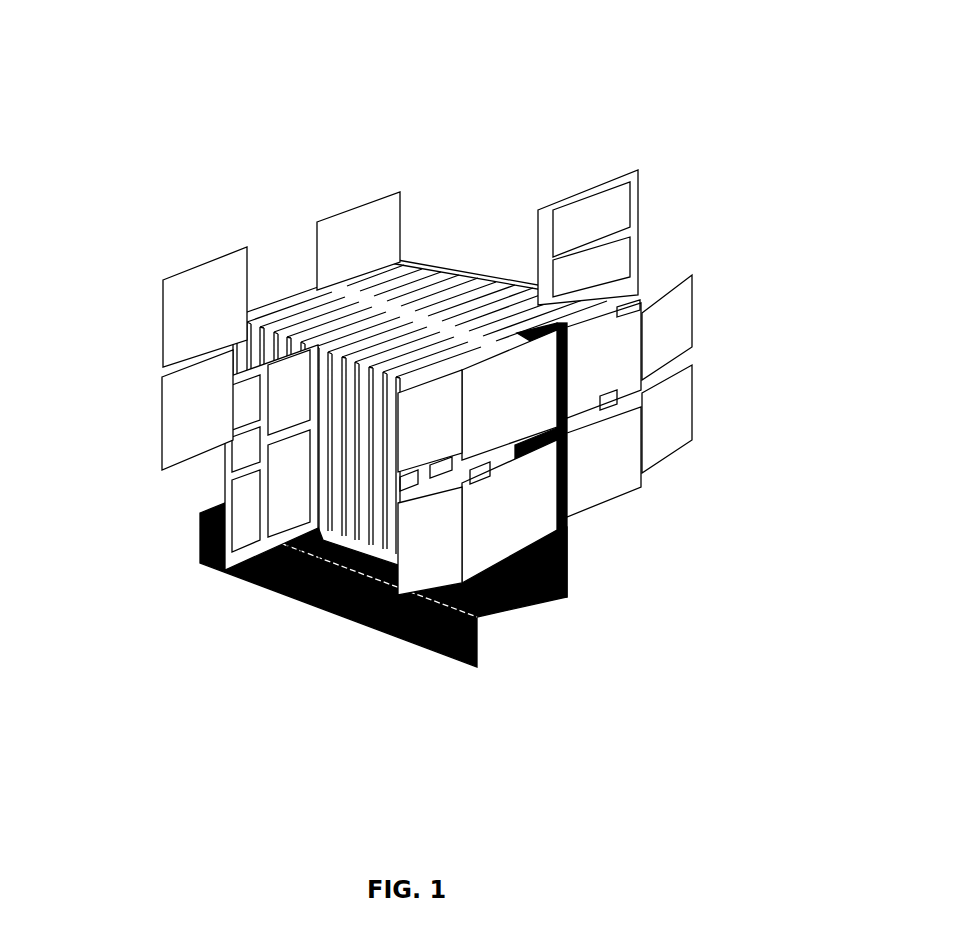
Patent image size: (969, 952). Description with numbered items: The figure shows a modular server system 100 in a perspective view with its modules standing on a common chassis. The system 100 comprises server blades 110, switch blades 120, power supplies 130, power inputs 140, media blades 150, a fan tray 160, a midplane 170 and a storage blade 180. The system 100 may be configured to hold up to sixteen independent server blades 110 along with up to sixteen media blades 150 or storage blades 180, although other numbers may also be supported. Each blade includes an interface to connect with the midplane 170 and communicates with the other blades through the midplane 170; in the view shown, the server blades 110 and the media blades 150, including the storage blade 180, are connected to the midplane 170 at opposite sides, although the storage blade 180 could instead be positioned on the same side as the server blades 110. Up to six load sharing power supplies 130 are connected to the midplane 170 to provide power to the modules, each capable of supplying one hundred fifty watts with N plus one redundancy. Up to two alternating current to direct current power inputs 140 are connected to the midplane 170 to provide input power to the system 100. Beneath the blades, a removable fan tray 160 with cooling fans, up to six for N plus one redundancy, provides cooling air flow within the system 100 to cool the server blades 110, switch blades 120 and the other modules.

The modular server system 100 is at (430, 434).
The server blades 110 is at (350, 377).
The switch blades 120 is at (683, 417).
The power supplies 130 is at (162, 358).
The power inputs 140 is at (392, 196).
The media blades 150 is at (470, 262).
The fan tray 160 is at (385, 637).
The midplane 170 is at (568, 555).
The storage blade 180 is at (604, 172).